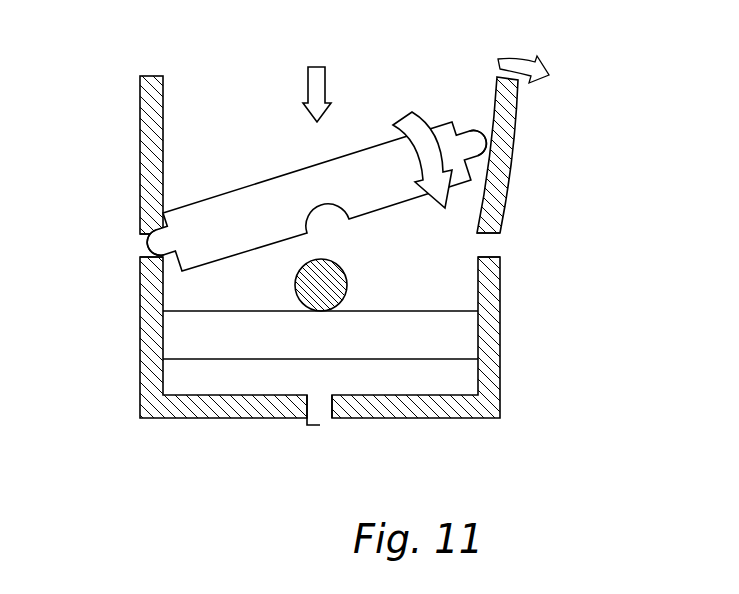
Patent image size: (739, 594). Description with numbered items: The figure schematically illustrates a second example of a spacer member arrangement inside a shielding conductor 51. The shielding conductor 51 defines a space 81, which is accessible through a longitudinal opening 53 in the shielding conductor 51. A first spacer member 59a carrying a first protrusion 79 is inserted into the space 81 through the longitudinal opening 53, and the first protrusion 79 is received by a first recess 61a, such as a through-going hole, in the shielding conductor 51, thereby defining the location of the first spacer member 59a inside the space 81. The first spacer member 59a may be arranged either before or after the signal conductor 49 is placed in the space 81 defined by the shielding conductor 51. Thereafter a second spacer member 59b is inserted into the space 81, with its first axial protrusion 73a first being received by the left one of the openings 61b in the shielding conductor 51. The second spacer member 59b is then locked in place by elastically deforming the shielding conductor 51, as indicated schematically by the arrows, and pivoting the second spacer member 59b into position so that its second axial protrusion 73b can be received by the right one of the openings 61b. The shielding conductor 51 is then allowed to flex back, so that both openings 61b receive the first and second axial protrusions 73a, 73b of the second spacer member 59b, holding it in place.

The shielding conductor 51 is at (140, 125).
The longitudinal opening 53 is at (384, 81).
The first spacer member 59a is at (264, 374).
The second spacer member 59b is at (285, 202).
The first recess 61a is at (325, 412).
The openings 61b is at (140, 237).
The first axial protrusion 73a is at (140, 247).
The second axial protrusion 73b is at (477, 135).
The first protrusion 79 is at (317, 427).
The space 81 is at (216, 171).
The signal conductor 49 is at (341, 282).